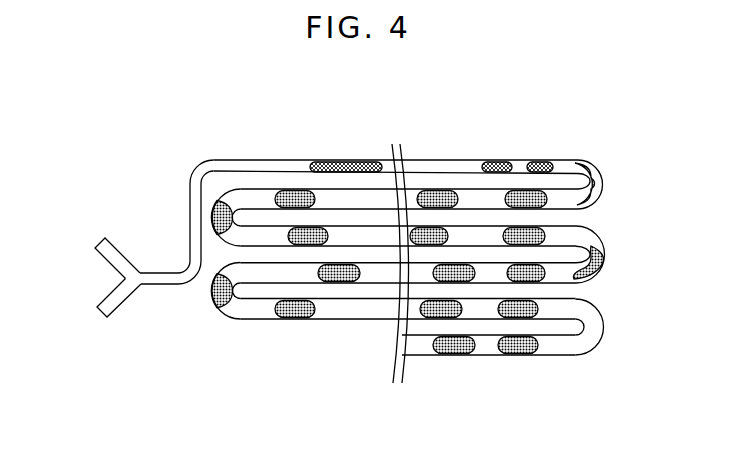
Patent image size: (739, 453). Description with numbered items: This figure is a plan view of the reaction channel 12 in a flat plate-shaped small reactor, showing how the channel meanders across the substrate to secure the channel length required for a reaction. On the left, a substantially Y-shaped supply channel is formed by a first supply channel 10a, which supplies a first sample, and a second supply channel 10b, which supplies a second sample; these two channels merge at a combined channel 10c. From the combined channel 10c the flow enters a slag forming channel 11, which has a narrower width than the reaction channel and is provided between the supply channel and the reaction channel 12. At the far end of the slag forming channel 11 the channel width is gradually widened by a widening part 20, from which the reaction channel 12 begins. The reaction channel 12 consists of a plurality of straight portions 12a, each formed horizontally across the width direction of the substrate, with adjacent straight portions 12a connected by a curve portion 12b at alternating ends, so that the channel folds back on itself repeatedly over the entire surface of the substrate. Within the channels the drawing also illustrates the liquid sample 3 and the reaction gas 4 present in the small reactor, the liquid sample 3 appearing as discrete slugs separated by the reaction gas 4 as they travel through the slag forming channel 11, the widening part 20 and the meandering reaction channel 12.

The liquid sample 3 is at (348, 161).
The reaction gas 4 is at (437, 160).
The first supply channel 10a is at (120, 272).
The second supply channel 10b is at (124, 297).
The combined channel 10c is at (170, 286).
The slag forming channel 11 is at (262, 158).
The reaction channel 12 is at (470, 189).
The straight portion 12a is at (493, 283).
The curve portion 12b is at (605, 253).
The widening part 20 is at (605, 182).